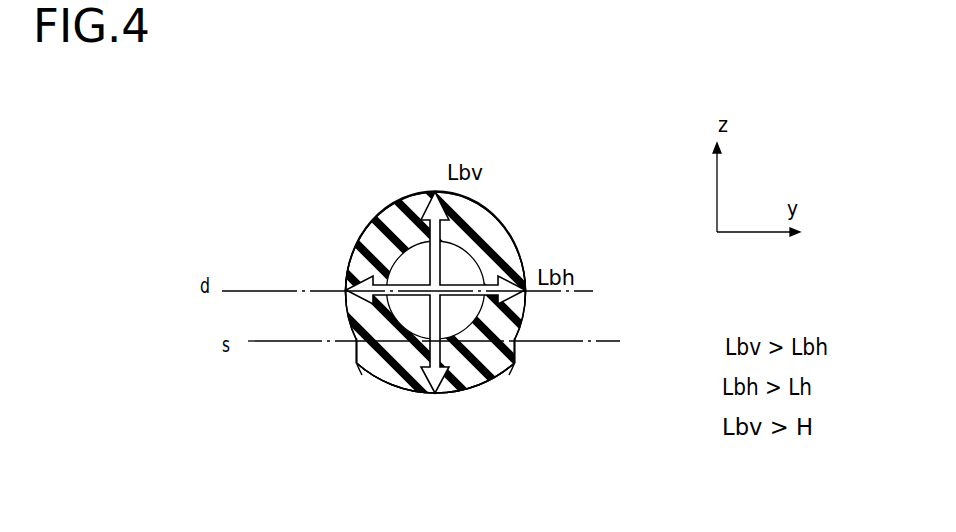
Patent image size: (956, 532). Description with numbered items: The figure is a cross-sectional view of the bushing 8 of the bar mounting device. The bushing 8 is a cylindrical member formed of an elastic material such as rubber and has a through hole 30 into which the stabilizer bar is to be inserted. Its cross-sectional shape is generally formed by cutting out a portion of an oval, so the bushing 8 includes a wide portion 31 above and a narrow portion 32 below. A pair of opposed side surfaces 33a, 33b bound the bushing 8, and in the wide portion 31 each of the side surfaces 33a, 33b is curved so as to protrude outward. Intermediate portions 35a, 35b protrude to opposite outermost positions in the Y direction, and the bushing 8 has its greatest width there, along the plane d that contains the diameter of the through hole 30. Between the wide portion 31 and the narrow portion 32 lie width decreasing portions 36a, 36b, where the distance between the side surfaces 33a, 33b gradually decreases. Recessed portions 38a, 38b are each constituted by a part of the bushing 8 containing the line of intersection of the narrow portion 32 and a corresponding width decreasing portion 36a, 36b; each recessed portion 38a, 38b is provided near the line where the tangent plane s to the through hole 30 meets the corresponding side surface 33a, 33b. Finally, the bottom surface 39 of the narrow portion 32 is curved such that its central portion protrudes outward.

The bushing 8 is at (510, 157).
The through hole 30 is at (398, 260).
The wide portion 31 is at (548, 252).
The narrow portion 32 is at (472, 398).
The side surface 33a is at (375, 193).
The side surface 33b is at (508, 208).
The intermediate portion 35a is at (347, 290).
The intermediate portion 35b is at (525, 292).
The width decreasing portion 36a is at (348, 320).
The width decreasing portion 36b is at (521, 322).
The recessed portion 38a is at (357, 342).
The recessed portion 38b is at (513, 343).
The bottom surface 39 is at (415, 392).